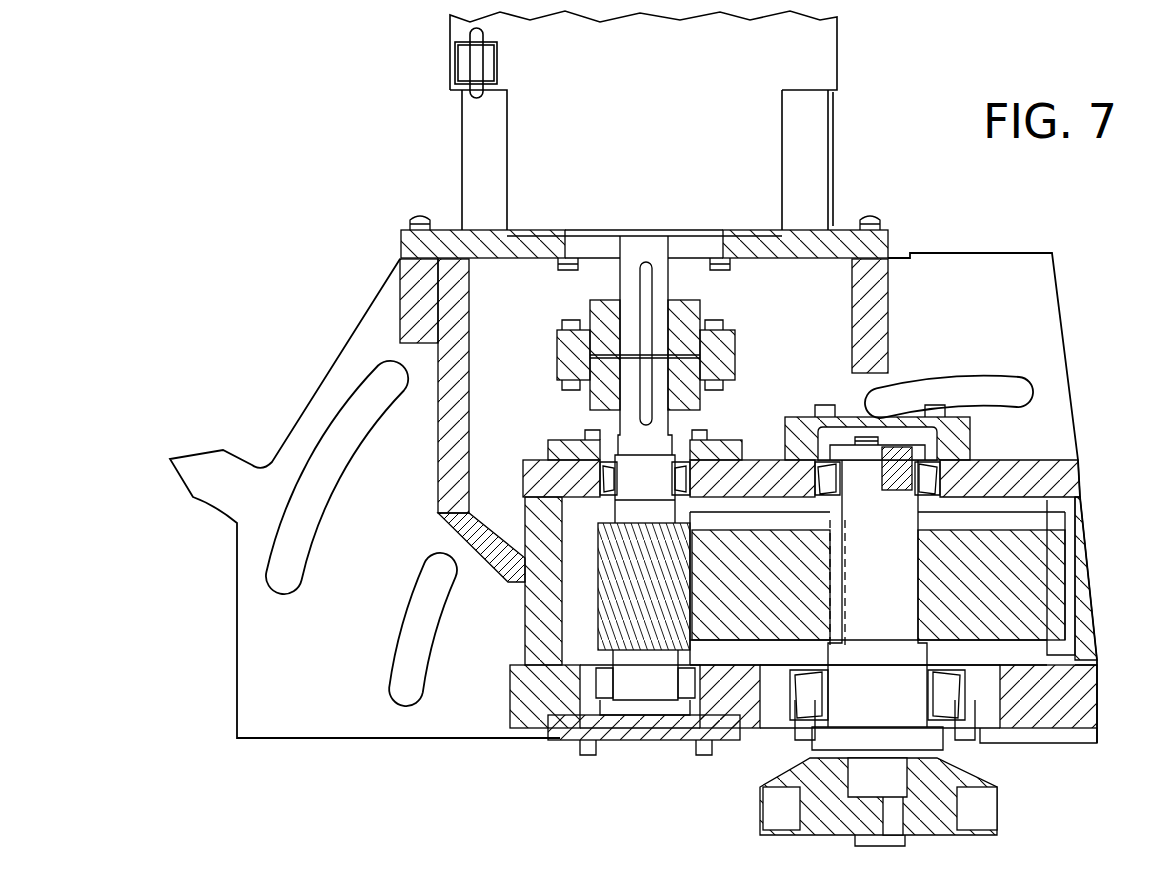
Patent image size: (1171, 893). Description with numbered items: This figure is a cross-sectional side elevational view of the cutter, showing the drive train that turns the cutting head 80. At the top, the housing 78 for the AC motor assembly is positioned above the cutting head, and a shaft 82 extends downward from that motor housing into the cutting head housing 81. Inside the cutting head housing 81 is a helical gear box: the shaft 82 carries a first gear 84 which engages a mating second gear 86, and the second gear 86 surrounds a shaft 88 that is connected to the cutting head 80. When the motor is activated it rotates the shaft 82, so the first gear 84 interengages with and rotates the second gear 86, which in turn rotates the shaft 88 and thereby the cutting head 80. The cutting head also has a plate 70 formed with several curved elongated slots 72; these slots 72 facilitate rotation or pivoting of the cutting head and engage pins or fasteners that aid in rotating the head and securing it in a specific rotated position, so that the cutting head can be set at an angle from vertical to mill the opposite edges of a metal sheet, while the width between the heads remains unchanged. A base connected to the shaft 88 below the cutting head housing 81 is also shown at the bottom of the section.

The plate 70 is at (368, 340).
The curved elongated slots 72 is at (352, 415).
The housing 78 is at (480, 148).
The cutting head 80 is at (985, 790).
The cutting head housing 81 is at (540, 590).
The shaft 82 is at (646, 475).
The first gear 84 is at (617, 622).
The second gear 86 is at (1052, 585).
The shaft 88 is at (877, 605).